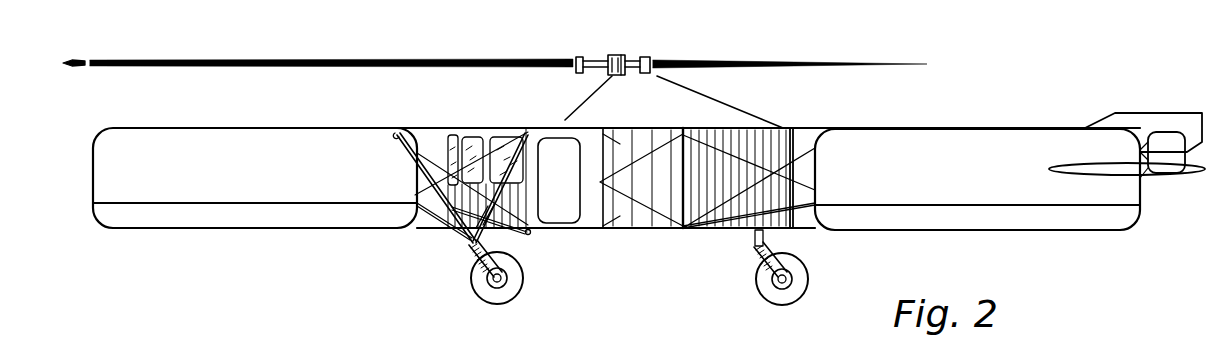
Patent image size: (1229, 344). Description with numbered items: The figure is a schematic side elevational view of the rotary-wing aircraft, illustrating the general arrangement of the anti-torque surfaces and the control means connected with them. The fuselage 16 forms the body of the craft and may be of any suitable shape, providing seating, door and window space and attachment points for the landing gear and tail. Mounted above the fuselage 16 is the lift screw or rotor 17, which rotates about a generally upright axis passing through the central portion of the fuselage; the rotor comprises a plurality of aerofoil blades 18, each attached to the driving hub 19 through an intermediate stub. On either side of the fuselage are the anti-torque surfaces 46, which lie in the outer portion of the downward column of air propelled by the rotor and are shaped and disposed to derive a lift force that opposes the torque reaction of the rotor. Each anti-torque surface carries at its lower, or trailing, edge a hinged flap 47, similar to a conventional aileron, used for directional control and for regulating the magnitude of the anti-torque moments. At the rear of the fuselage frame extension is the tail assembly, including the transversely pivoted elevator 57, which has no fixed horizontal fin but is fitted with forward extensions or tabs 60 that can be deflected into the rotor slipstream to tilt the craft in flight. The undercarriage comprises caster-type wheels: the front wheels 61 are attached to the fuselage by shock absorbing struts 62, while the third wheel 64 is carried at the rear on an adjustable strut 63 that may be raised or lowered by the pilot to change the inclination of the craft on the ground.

The fuselage 16 is at (598, 229).
The lift screw or rotor 17 is at (495, 45).
The aerofoil blades 18 is at (305, 64).
The driving hub 19 is at (615, 57).
The anti-torque surfaces 46 is at (616, 179).
The hinged flap 47 is at (312, 217).
The elevator 57 is at (1192, 174).
The tabs 60 is at (1088, 165).
The front wheels 61 is at (500, 285).
The shock absorbing struts 62 is at (508, 237).
The adjustable strut 63 is at (750, 233).
The third wheel 64 is at (794, 284).